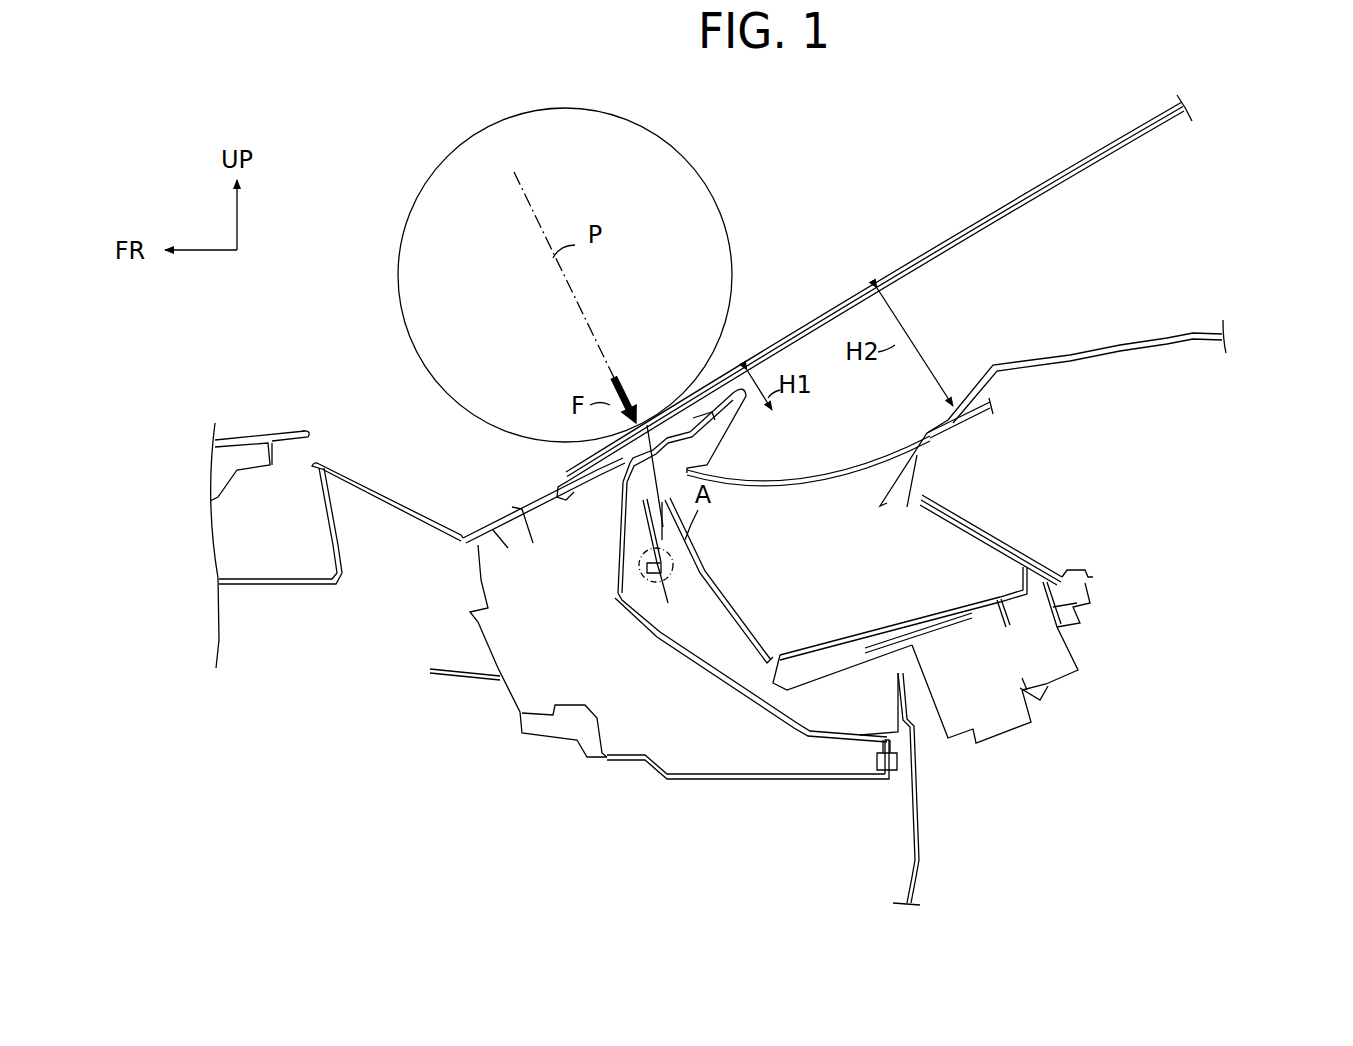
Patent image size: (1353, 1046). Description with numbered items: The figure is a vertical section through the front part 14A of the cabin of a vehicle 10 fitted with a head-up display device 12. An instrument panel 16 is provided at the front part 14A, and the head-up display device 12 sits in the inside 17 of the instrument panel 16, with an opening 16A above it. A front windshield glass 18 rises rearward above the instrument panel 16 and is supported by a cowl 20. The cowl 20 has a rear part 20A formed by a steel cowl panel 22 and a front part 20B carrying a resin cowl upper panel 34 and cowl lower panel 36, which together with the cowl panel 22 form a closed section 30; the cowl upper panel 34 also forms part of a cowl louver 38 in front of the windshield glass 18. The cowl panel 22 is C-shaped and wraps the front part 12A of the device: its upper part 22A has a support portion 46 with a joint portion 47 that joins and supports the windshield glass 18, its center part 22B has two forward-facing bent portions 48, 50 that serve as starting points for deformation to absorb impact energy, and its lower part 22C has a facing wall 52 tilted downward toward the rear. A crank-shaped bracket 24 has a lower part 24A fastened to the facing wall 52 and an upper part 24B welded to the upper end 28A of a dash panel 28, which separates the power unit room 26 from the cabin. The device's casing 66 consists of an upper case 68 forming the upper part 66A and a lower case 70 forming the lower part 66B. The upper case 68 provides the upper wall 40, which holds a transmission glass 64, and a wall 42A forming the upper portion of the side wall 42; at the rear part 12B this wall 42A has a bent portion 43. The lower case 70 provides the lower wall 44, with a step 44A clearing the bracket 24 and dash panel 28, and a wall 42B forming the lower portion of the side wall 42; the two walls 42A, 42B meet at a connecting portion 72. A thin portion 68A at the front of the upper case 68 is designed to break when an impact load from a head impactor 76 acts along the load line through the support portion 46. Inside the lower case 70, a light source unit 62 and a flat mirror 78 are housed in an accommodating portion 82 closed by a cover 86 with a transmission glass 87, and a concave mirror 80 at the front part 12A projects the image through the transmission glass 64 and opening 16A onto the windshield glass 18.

The vehicle 10 is at (1012, 130).
The head-up display device 12 is at (1100, 488).
The front part of the head-up display device 12A is at (737, 462).
The rear part of the head-up display device 12B is at (927, 425).
The front part of the cabin 14A is at (1155, 268).
The instrument panel 16 is at (1108, 345).
The opening of the instrument panel 16A is at (980, 365).
The inside of the instrument panel 17 is at (1142, 429).
The front windshield glass 18 is at (950, 232).
The cowl 20 is at (694, 782).
The rear part of the cowl 20A is at (785, 732).
The front part of the cowl 20B is at (540, 748).
The cowl panel 22 is at (680, 700).
The upper part of the cowl panel 22A is at (620, 492).
The center part of the cowl panel 22B is at (668, 645).
The lower part of the cowl panel 22C is at (825, 740).
The bracket 24 is at (842, 822).
The lower part of the bracket 24A is at (905, 768).
The upper part of the bracket 24B is at (870, 735).
The power unit room 26 is at (525, 862).
The dash panel 28 is at (915, 878).
The upper end of the dash panel 28A is at (900, 710).
The closed section 30 is at (543, 657).
The cowl upper panel 34 is at (478, 612).
The cowl lower panel 36 is at (498, 677).
The cowl louver 38 is at (380, 485).
The upper wall 40 is at (620, 500).
The side wall 42 is at (462, 613).
The wall of the upper case 42A is at (613, 573).
The wall of the lower case 42B is at (495, 640).
The bent portion 43 is at (917, 500).
The lower wall 44 is at (780, 715).
The step 44A is at (925, 740).
The support portion 46 is at (713, 383).
The joint portion 47 is at (652, 430).
The bent portion 48 is at (640, 598).
The bent portion 50 is at (665, 655).
The facing wall 52 is at (782, 655).
The light source unit 62 is at (1040, 710).
The transmission glass 64 is at (845, 462).
The casing 66 is at (1008, 520).
The upper part of the casing 66A is at (935, 492).
The lower part of the casing 66B is at (1075, 655).
The upper case 68 is at (1030, 553).
The thin portion 68A is at (680, 580).
The lower case 70 is at (1095, 678).
The connecting portion 72 is at (640, 578).
The head impactor 76 is at (655, 140).
The flat mirror 78 is at (900, 645).
The concave mirror 80 is at (690, 545).
The accommodating portion 82 is at (967, 691).
The cover 86 is at (950, 600).
The transmission glass 87 is at (860, 635).